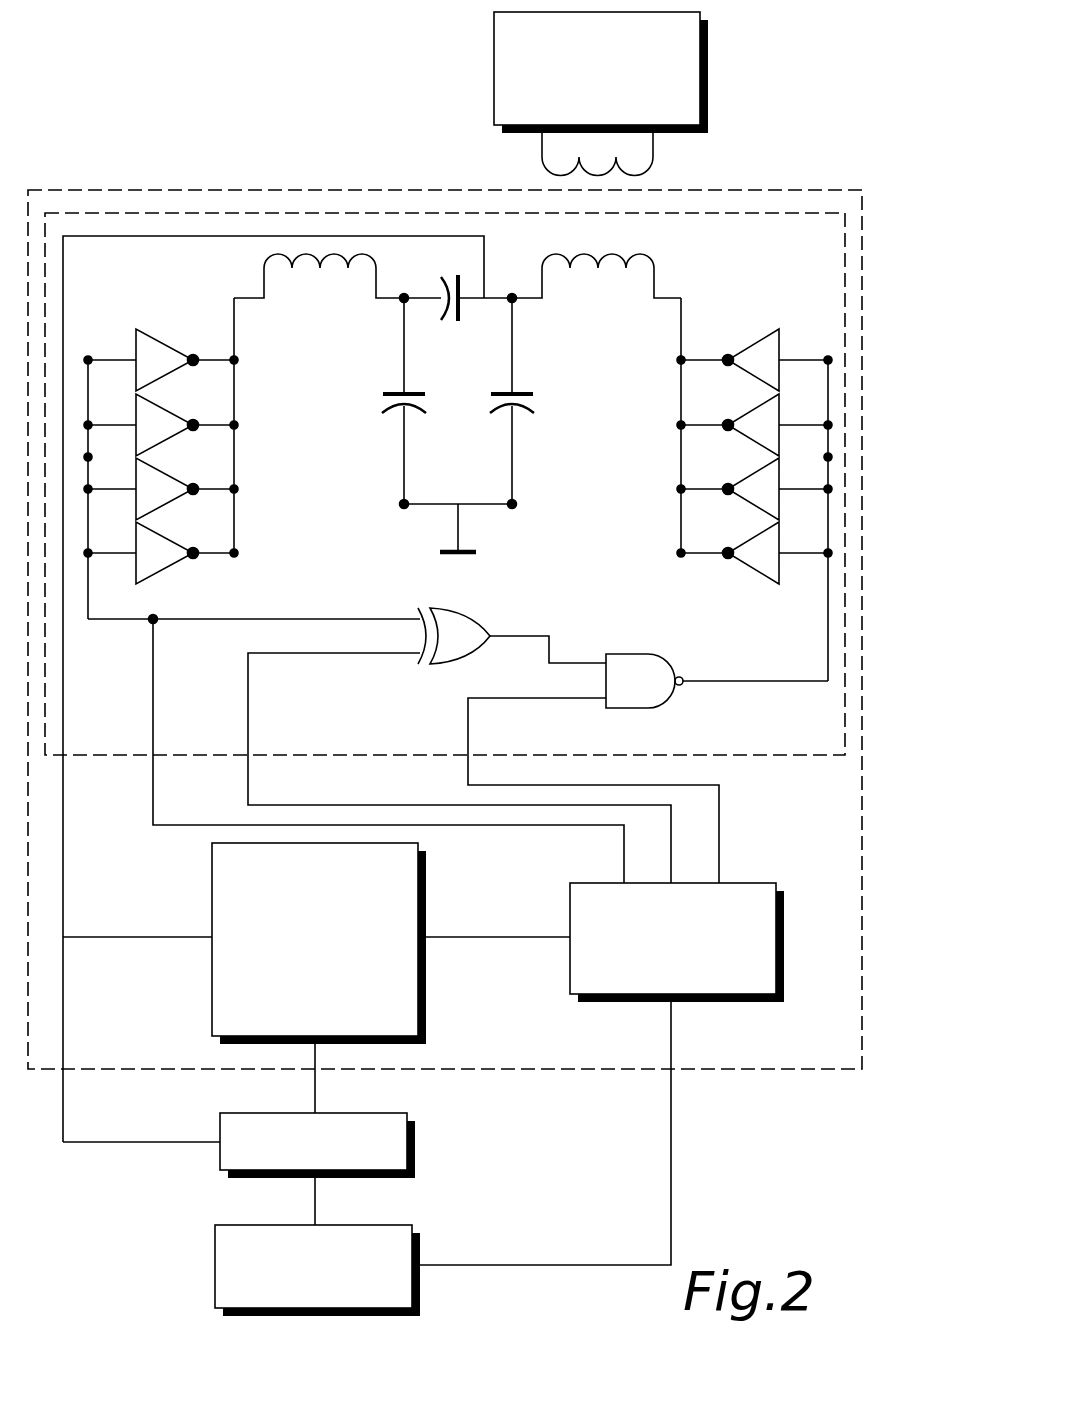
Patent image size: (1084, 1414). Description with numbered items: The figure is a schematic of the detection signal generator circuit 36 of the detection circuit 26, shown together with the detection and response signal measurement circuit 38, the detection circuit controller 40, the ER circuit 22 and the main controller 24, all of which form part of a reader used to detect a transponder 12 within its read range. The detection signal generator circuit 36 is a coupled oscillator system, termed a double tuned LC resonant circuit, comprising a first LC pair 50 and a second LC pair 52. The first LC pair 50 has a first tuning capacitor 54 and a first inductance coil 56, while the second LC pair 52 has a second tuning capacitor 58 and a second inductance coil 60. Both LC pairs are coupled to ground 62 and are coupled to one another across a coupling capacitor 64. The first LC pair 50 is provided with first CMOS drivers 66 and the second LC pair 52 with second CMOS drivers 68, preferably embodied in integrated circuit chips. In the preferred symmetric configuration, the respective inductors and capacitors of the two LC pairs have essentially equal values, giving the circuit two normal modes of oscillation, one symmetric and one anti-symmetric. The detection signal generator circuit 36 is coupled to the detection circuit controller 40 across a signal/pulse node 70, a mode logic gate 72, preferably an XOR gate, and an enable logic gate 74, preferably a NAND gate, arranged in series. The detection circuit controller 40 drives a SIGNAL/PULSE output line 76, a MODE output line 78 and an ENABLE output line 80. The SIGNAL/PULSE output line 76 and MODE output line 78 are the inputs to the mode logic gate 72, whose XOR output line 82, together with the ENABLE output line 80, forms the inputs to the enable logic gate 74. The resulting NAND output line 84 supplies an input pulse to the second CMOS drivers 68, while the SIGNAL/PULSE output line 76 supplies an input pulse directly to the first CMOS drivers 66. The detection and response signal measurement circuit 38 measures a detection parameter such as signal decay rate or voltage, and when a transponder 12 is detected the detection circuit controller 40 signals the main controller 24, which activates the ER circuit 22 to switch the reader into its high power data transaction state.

The transponder 12 is at (690, 42).
The exciter/reader (ER) circuit 22 is at (395, 1132).
The main controller 24 is at (400, 1240).
The detection circuit 26 is at (760, 1070).
The detection signal generator circuit 36 is at (743, 755).
The detection and response signal measurement circuit 38 is at (413, 868).
The detection circuit controller 40 is at (740, 890).
The first LC pair 50 is at (596, 444).
The second LC pair 52 is at (326, 444).
The first tuning capacitor 54 is at (512, 392).
The first inductance coil 56 is at (654, 256).
The second tuning capacitor 58 is at (404, 392).
The second inductance coil 60 is at (262, 256).
The ground 62 is at (462, 548).
The coupling capacitor 64 is at (448, 300).
The first CMOS drivers 66 is at (757, 570).
The second CMOS drivers 68 is at (168, 563).
The signal/pulse node 70 is at (308, 618).
The mode logic gate 72 is at (458, 630).
The enable logic gate 74 is at (642, 658).
The SIGNAL/PULSE output line 76 is at (155, 722).
The MODE output line 78 is at (435, 804).
The ENABLE output line 80 is at (470, 698).
The XOR output line 82 is at (550, 650).
The NAND output line 84 is at (828, 668).